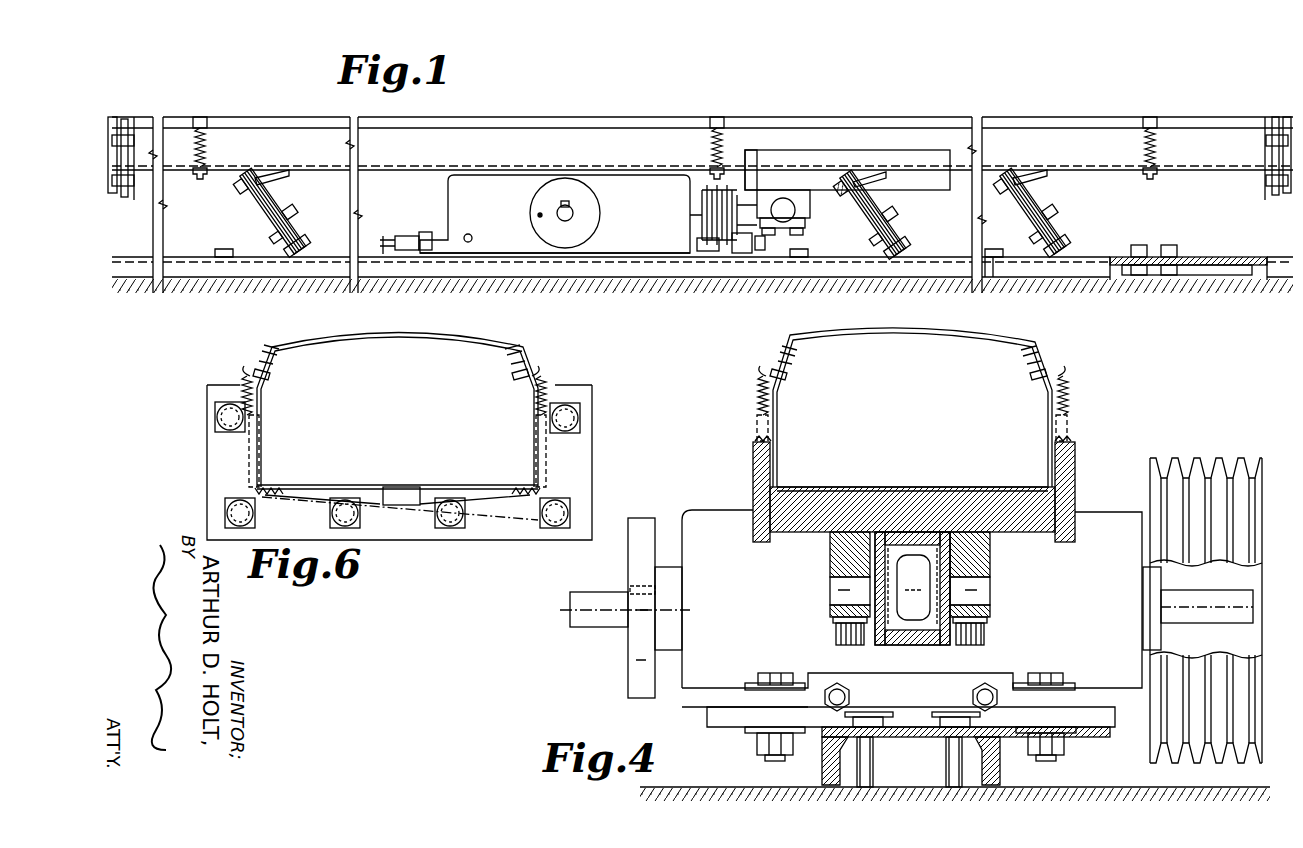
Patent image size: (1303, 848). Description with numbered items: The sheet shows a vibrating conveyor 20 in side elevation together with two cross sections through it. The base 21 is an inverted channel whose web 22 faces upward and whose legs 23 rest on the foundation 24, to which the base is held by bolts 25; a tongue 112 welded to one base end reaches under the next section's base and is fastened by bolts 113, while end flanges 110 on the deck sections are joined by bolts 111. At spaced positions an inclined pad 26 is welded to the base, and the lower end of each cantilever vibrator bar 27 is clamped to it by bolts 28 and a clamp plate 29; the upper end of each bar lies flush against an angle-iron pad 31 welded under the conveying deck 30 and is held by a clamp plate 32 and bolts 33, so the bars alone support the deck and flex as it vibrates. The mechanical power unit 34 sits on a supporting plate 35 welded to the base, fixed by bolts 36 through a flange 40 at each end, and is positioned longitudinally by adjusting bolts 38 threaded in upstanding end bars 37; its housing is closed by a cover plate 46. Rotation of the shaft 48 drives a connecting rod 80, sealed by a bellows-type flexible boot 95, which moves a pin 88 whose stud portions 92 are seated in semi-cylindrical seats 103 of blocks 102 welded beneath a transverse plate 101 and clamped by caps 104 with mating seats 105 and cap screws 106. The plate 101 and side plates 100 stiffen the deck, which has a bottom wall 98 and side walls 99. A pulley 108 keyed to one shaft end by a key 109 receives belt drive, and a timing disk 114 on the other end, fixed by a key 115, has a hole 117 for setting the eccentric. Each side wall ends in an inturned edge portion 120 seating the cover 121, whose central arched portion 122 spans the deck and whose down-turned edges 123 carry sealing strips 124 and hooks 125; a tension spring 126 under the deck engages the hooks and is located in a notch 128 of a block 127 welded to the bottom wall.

In FIG. 1, the vibrating conveyor 20 is at (921, 116).
In FIG. 1, the base 21 is at (129, 256).
In FIG. 1, the web 22 is at (1124, 256).
In FIG. 4, the web 22 is at (917, 725).
In FIG. 1, the legs 23 is at (615, 268).
In FIG. 4, the legs 23 is at (825, 762).
In FIG. 1, the foundation 24 is at (1020, 286).
In FIG. 4, the foundation 24 is at (1135, 787).
In FIG. 1, the bolts 25 is at (222, 250).
In FIG. 4, the bolts 25 is at (875, 765).
In FIG. 1, the pad 26 is at (305, 247).
In FIG. 1, the cantilever vibrator bar 27 is at (272, 214).
In FIG. 1, the bolts 28 is at (292, 234).
In FIG. 1, the clamp plate 29 is at (262, 238).
In FIG. 1, the conveying deck 30 is at (1114, 175).
In FIG. 6, the conveying deck 30 is at (428, 492).
In FIG. 4, the conveying deck 30 is at (838, 494).
In FIG. 1, the pad 31 is at (265, 184).
In FIG. 1, the clamp plate 32 is at (258, 180).
In FIG. 1, the bolts 33 is at (262, 178).
In FIG. 4, the mechanical power unit 34 is at (1099, 511).
In FIG. 1, the supporting plate 35 is at (540, 257).
In FIG. 4, the supporting plate 35 is at (730, 720).
In FIG. 4, the bolts 36 is at (775, 675).
In FIG. 1, the upstanding end bar 37 is at (400, 236).
In FIG. 4, the upstanding end bar 37 is at (893, 690).
In FIG. 1, the adjusting bolts 38 is at (760, 251).
In FIG. 4, the adjusting bolts 38 is at (842, 690).
In FIG. 1, the flange 40 is at (428, 251).
In FIG. 1, the cover plate 46 is at (609, 176).
In FIG. 1, the shaft 48 is at (573, 211).
In FIG. 4, the shaft 48 is at (578, 616).
In FIG. 1, the connecting rod 80 is at (750, 200).
In FIG. 1, the pin 88 is at (786, 208).
In FIG. 4, the pin 88 is at (995, 600).
In FIG. 4, the stud portions 92 is at (988, 590).
In FIG. 1, the flexible boot 95 is at (700, 213).
In FIG. 6, the bottom wall 98 is at (333, 486).
In FIG. 4, the bottom wall 98 is at (955, 486).
In FIG. 6, the side walls 99 is at (262, 430).
In FIG. 4, the side walls 99 is at (770, 430).
In FIG. 4, the plate 100 is at (754, 477).
In FIG. 4, the plate 101 is at (872, 486).
In FIG. 4, the blocks 102 is at (834, 556).
In FIG. 4, the semi-cylindrical seat 103 is at (834, 572).
In FIG. 4, the caps 104 is at (832, 607).
In FIG. 4, the semi-cylindrical seats 105 is at (836, 615).
In FIG. 4, the cap screws 106 is at (836, 635).
In FIG. 4, the pulley 108 is at (1208, 460).
In FIG. 4, the key 109 is at (1238, 590).
In FIG. 1, the flange 110 is at (130, 140).
In FIG. 6, the flange 110 is at (215, 460).
In FIG. 6, the bolts 111 is at (222, 414).
In FIG. 1, the tongue 112 is at (1238, 264).
In FIG. 1, the bolts 113 is at (1150, 248).
In FIG. 1, the timing disk 114 is at (596, 224).
In FIG. 4, the timing disk 114 is at (634, 668).
In FIG. 1, the key 115 is at (562, 204).
In FIG. 4, the key 115 is at (630, 588).
In FIG. 1, the hole 117 is at (537, 215).
In FIG. 6, the inturned edge portion 120 is at (268, 367).
In FIG. 4, the inturned edge portion 120 is at (784, 369).
In FIG. 1, the cover 121 is at (510, 117).
In FIG. 6, the cover 121 is at (400, 333).
In FIG. 4, the cover 121 is at (918, 333).
In FIG. 1, the central arched portion 122 is at (475, 280).
In FIG. 6, the central arched portion 122 is at (466, 333).
In FIG. 4, the central arched portion 122 is at (968, 333).
In FIG. 6, the edges 123 is at (262, 348).
In FIG. 4, the edges 123 is at (780, 349).
In FIG. 6, the sealing strips 124 is at (273, 352).
In FIG. 4, the sealing strips 124 is at (790, 352).
In FIG. 6, the hooks 125 is at (249, 372).
In FIG. 4, the hooks 125 is at (765, 372).
In FIG. 1, the tension spring 126 is at (206, 152).
In FIG. 6, the tension spring 126 is at (556, 395).
In FIG. 4, the tension spring 126 is at (1068, 402).
In FIG. 1, the block 127 is at (196, 178).
In FIG. 6, the block 127 is at (412, 500).
In FIG. 6, the notch 128 is at (400, 487).